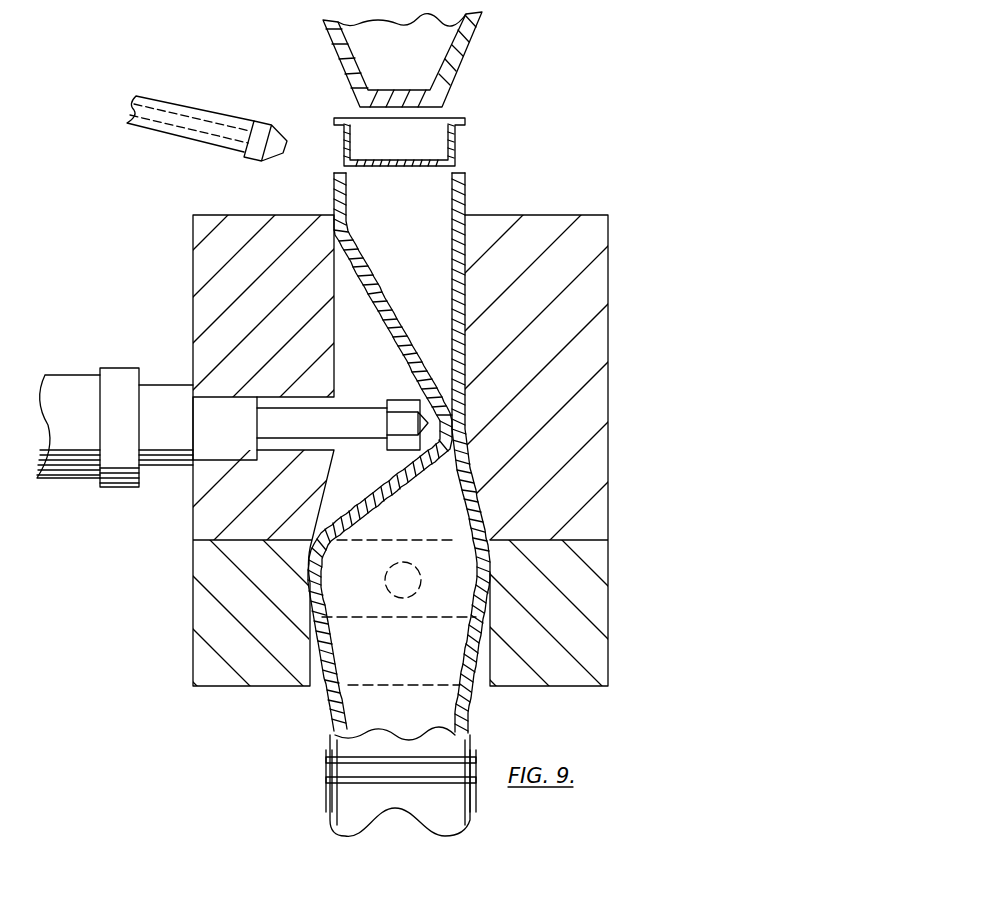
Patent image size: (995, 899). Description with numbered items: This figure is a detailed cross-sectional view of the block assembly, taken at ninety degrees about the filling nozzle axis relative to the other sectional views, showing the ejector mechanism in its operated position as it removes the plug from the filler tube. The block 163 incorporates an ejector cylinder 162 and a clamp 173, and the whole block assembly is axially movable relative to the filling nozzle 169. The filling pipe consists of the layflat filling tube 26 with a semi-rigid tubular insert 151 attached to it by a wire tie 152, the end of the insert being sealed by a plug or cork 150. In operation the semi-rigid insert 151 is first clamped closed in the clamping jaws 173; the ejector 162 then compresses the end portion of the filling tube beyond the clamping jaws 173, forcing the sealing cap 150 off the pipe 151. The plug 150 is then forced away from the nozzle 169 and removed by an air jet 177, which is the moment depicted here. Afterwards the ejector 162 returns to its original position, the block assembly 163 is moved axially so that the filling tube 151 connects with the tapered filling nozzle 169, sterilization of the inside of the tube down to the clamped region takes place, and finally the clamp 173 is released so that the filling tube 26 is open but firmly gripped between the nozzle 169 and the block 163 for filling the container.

The filling tube 26 is at (340, 805).
The plug 150 is at (457, 134).
The semi-rigid tubular insert 151 is at (462, 357).
The wire tie 152 is at (326, 762).
The ejector cylinder 162 is at (84, 491).
The block 163 is at (580, 258).
The filling nozzle 169 is at (377, 78).
The clamp 173 is at (453, 598).
The air jet 177 is at (182, 123).